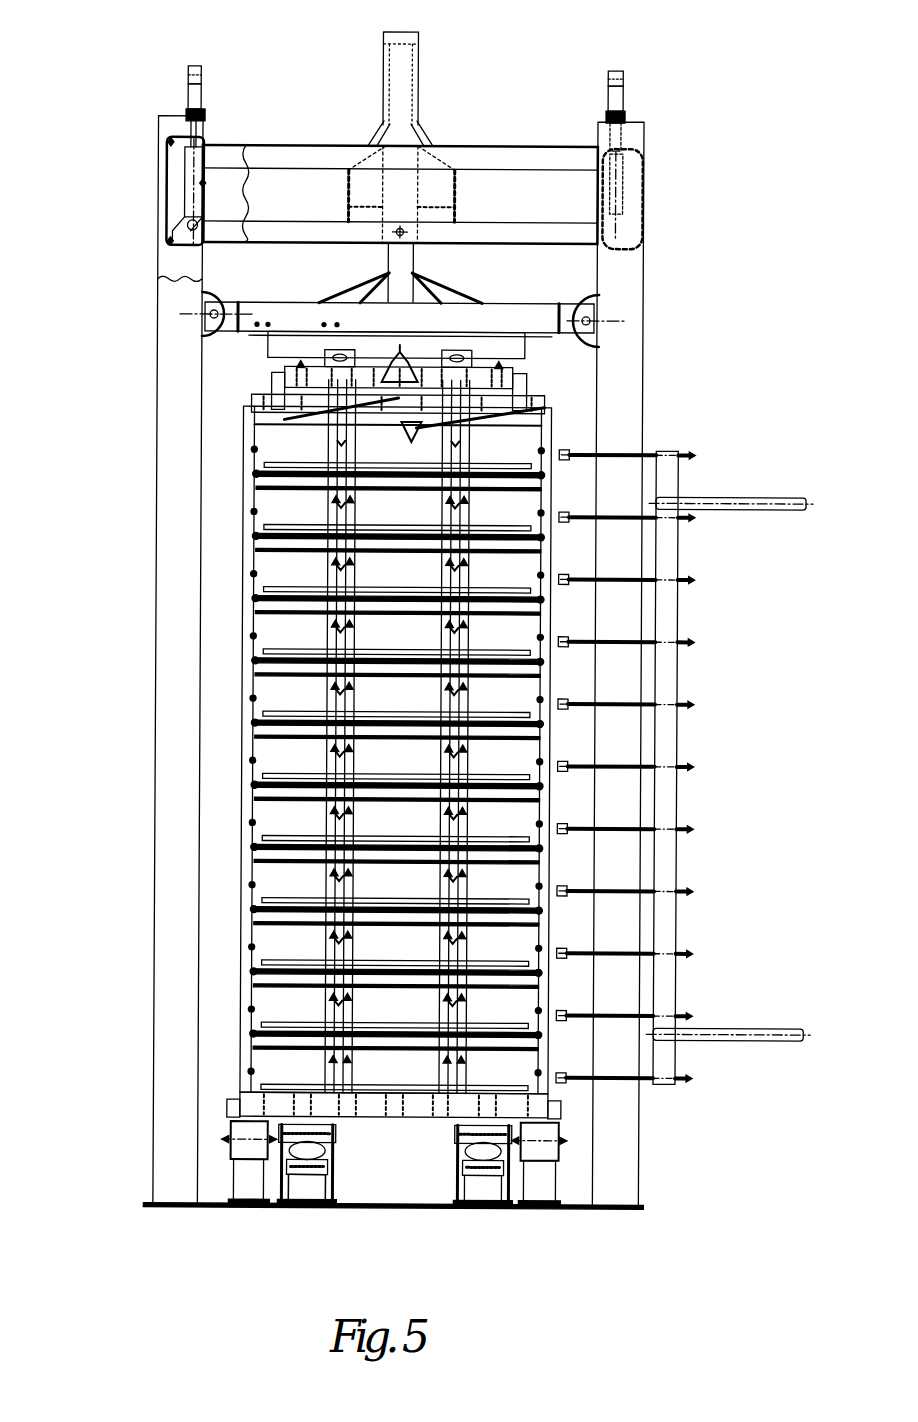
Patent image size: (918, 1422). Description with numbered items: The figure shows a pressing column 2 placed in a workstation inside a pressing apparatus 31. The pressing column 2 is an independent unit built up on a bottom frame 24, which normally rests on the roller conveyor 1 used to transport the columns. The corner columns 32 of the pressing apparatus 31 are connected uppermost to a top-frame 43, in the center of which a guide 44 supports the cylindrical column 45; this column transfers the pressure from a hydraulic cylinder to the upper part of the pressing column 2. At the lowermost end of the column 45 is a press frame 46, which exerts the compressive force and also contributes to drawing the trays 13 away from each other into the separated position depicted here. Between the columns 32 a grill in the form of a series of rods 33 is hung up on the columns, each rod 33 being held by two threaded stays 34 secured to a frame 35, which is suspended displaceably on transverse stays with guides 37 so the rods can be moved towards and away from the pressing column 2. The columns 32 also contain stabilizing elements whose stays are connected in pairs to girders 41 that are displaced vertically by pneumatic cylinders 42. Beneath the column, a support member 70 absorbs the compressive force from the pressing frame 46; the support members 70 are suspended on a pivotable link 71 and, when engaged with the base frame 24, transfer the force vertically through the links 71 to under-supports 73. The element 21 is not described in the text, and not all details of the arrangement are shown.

The roller conveyor 1 is at (244, 1187).
The pressing column 2 is at (302, 712).
The trays 13 is at (287, 723).
The plate 21 is at (278, 697).
The bottom frame 24 is at (396, 1112).
The pressing apparatus 31 is at (422, 612).
The corner columns 32 is at (170, 330).
The rods 33 is at (563, 525).
The threaded stays 34 is at (612, 585).
The frame 35 is at (680, 742).
The guides 37 is at (762, 505).
The girders 41 is at (199, 75).
The pneumatic cylinders 42 is at (165, 190).
The top-frame 43 is at (494, 135).
The guide 44 is at (418, 37).
The cylindrical column 45 is at (405, 255).
The press frame 46 is at (517, 317).
The support member 70 is at (452, 1133).
The pivotable link 71 is at (330, 1163).
The under-supports 73 is at (288, 1187).